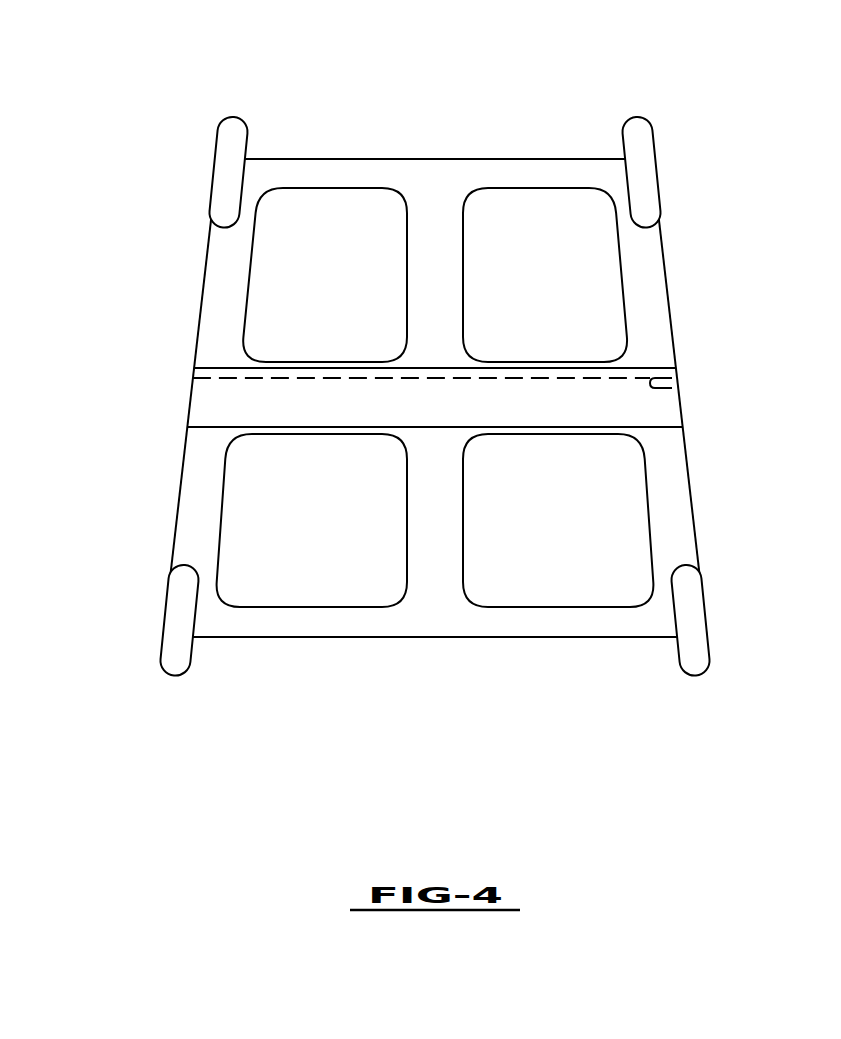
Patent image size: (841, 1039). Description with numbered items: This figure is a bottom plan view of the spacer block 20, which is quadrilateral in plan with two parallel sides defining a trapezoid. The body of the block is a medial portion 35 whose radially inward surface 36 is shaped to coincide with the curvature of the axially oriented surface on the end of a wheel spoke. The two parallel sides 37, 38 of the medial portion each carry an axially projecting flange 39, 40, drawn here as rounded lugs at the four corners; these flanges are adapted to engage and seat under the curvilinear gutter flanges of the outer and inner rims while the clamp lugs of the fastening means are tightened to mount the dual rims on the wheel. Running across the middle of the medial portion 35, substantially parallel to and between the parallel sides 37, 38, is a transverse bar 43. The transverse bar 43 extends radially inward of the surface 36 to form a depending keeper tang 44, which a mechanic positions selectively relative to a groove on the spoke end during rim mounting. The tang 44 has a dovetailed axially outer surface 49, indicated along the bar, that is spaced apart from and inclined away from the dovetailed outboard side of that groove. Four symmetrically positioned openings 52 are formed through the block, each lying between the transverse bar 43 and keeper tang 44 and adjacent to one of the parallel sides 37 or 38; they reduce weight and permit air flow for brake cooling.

The spacer block 20 is at (190, 90).
The medial portion 35 is at (193, 340).
The radially inward surface 36 is at (236, 319).
The parallel side 37 is at (413, 158).
The parallel side 38 is at (427, 637).
The axially projecting flange 39 is at (237, 135).
The axially projecting flange 40 is at (177, 657).
The transverse bar 43 is at (659, 368).
The tang 44 is at (695, 403).
The dovetailed axially outer surface 49 is at (672, 387).
The openings 52 is at (287, 280).